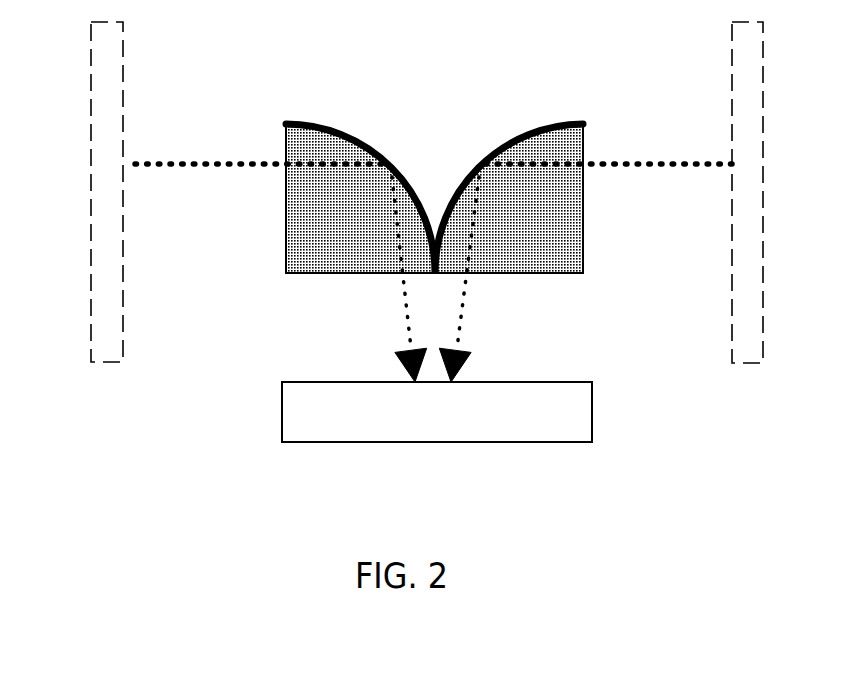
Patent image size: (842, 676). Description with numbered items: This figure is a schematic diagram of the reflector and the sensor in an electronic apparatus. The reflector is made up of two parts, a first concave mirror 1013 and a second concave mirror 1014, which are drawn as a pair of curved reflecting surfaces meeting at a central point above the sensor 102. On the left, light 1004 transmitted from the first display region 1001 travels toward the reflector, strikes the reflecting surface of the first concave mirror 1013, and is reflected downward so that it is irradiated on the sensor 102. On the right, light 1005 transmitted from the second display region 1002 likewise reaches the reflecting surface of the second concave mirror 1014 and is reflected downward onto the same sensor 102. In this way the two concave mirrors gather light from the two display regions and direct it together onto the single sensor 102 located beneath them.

The first display region 1001 is at (92, 318).
The second display region 1002 is at (730, 335).
The light 1004 is at (247, 163).
The light 1005 is at (708, 168).
The first concave mirror 1013 is at (305, 143).
The second concave mirror 1014 is at (490, 147).
The sensor 102 is at (298, 412).